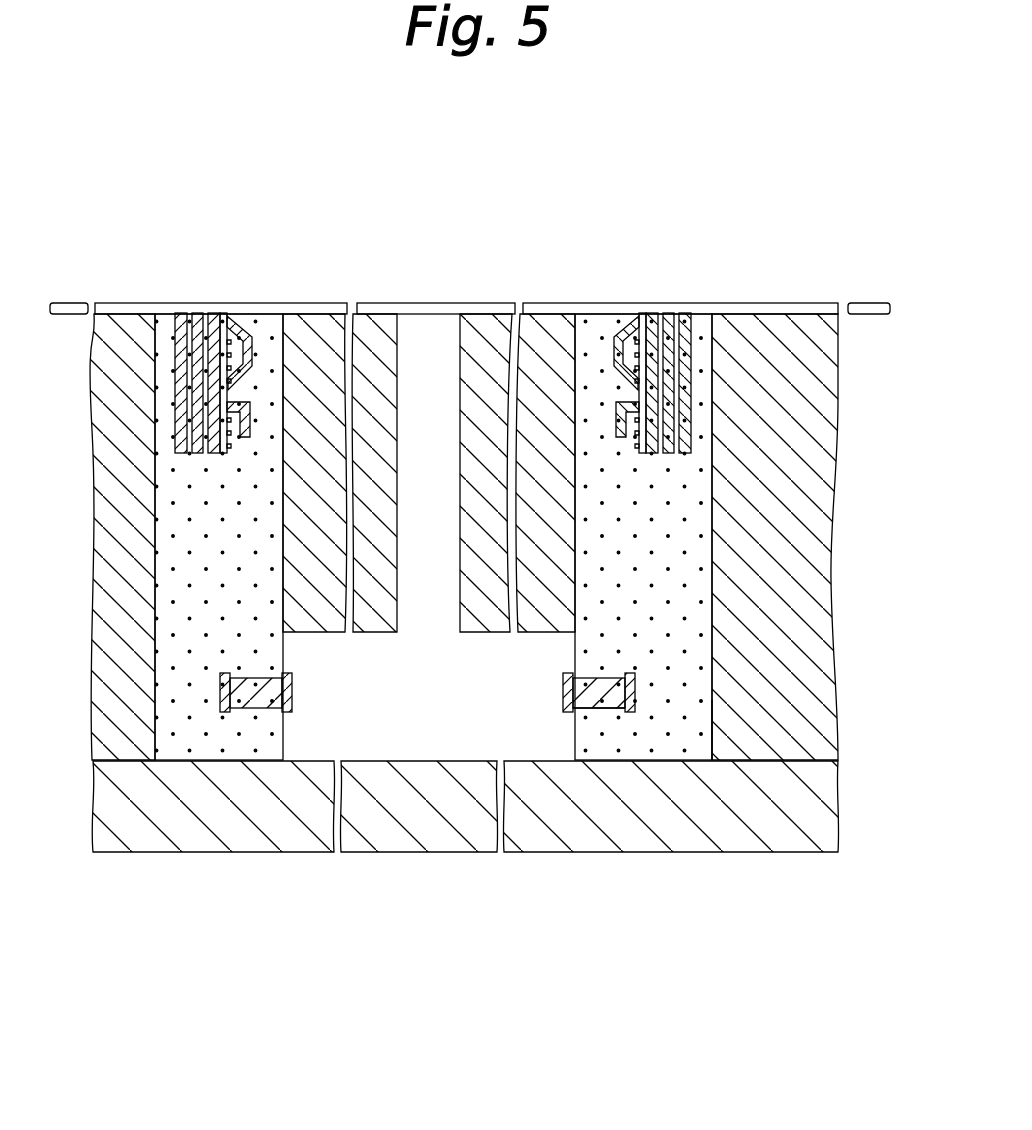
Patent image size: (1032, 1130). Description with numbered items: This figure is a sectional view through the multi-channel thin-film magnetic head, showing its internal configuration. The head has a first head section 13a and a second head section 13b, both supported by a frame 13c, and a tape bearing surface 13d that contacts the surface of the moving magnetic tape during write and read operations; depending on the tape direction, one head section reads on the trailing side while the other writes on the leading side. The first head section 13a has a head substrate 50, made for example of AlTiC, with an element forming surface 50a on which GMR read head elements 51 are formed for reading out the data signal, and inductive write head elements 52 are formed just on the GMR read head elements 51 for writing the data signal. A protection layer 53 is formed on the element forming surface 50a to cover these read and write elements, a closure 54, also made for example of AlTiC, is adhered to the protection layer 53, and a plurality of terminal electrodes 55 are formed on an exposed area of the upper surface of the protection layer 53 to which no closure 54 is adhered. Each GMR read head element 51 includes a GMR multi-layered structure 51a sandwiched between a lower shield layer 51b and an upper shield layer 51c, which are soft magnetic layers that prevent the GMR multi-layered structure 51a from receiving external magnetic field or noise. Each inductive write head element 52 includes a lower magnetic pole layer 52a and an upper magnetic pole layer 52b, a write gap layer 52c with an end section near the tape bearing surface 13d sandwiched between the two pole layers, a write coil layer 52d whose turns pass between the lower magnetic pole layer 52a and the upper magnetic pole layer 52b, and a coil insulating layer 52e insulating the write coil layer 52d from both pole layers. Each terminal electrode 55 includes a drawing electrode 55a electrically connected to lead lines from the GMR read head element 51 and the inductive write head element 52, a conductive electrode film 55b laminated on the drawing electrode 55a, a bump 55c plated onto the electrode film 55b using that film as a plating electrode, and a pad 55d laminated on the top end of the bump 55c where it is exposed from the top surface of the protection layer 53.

The first head section 13a is at (760, 162).
The second head section 13b is at (283, 222).
The frame 13c is at (537, 836).
The tape bearing surface 13d is at (588, 306).
The head substrate 50 is at (810, 684).
The element forming surface 50a is at (690, 748).
The GMR read head element 51 is at (190, 303).
The GMR multi-layered structure 51a is at (666, 313).
The lower shield layer 51b is at (685, 313).
The upper shield layer 51c is at (648, 313).
The inductive write head element 52 is at (224, 303).
The lower magnetic pole layer 52a is at (642, 316).
The upper magnetic pole layer 52b is at (616, 316).
The write gap layer 52c is at (638, 316).
The write coil layer 52d is at (631, 316).
The coil insulating layer 52e is at (623, 316).
The protection layer 53 is at (630, 745).
The closure 54 is at (472, 601).
The terminal electrode 55 is at (308, 710).
The drawing electrode 55a is at (575, 712).
The electrode film 55b is at (566, 701).
The bump 55c is at (566, 698).
The pad 55d is at (563, 680).